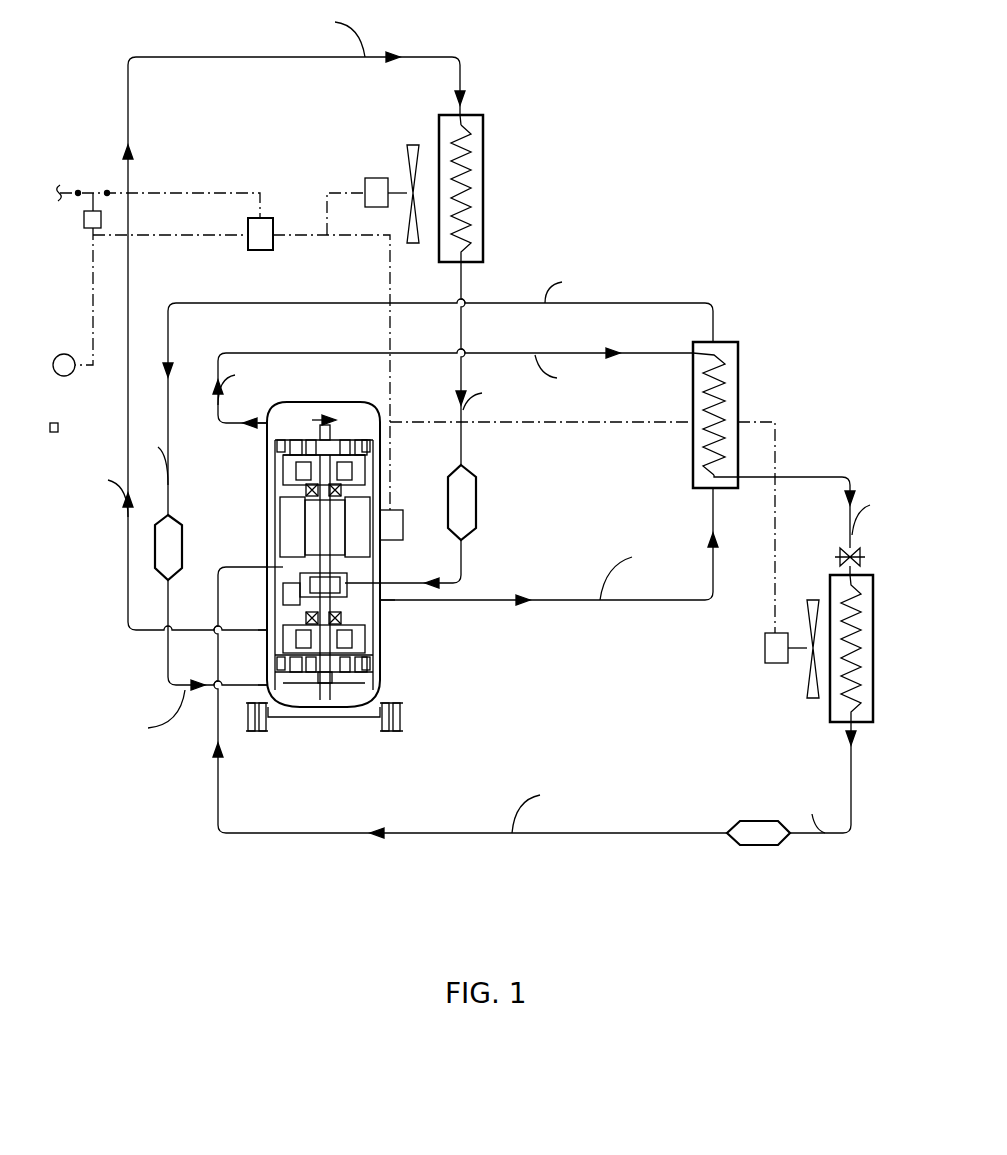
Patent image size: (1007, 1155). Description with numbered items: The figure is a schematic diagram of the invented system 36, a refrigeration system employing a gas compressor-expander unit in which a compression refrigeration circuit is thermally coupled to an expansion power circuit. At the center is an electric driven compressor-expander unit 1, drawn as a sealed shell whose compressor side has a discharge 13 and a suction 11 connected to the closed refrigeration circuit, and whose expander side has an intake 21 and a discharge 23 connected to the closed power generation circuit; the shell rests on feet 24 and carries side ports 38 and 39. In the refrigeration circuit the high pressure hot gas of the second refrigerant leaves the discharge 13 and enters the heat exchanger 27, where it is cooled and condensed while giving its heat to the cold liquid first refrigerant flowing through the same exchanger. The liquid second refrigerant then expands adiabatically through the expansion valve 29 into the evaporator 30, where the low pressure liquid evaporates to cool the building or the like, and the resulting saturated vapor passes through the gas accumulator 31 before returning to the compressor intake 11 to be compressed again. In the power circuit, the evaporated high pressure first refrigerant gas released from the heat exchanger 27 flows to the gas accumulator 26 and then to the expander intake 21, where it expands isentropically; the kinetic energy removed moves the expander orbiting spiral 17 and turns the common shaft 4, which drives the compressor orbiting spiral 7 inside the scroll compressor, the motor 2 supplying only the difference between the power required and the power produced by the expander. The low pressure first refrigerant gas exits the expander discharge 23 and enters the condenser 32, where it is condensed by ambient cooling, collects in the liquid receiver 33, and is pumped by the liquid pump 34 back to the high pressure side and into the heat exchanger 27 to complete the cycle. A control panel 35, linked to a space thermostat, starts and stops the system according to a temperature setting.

The compressor-expander unit 1 is at (305, 745).
The motor 2 is at (302, 517).
The common shaft 4 is at (310, 552).
The compressor orbiting spiral 7 is at (280, 433).
The suction 11 is at (265, 565).
The discharge 13 is at (258, 423).
The expander orbiting spiral 17 is at (360, 655).
The expander intake 21 is at (265, 685).
The expander discharge 23 is at (265, 625).
The mounting feet 24 is at (400, 728).
The gas accumulator 26 is at (157, 568).
The heat exchanger 27 is at (742, 410).
The expansion valve 29 is at (862, 558).
The evaporator 30 is at (876, 648).
The gas accumulator 31 is at (755, 847).
The condenser 32 is at (485, 150).
The liquid receiver 33 is at (477, 510).
The liquid pump 34 is at (300, 578).
The control panel 35 is at (273, 222).
The system 36 is at (160, 890).
The port 38 is at (400, 583).
The outlet port 39 is at (400, 602).